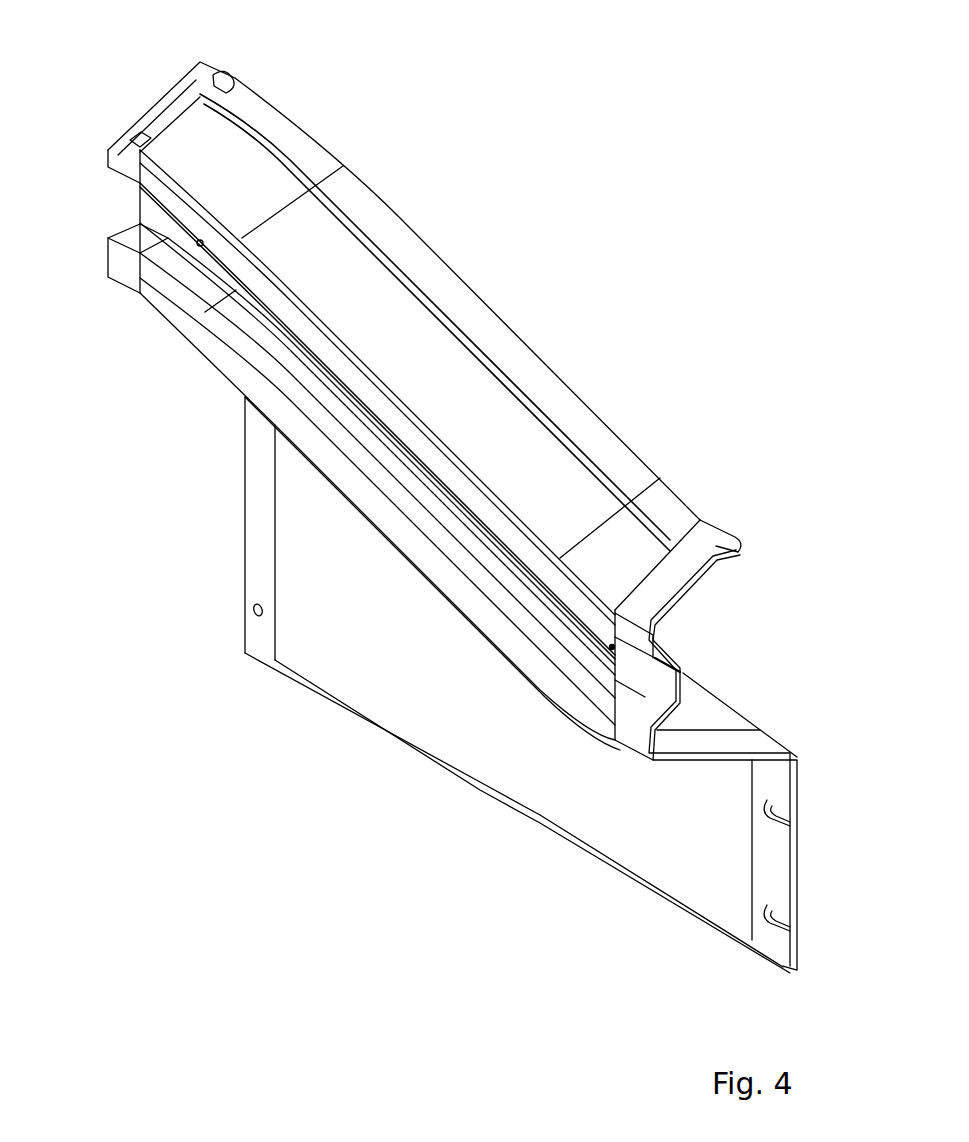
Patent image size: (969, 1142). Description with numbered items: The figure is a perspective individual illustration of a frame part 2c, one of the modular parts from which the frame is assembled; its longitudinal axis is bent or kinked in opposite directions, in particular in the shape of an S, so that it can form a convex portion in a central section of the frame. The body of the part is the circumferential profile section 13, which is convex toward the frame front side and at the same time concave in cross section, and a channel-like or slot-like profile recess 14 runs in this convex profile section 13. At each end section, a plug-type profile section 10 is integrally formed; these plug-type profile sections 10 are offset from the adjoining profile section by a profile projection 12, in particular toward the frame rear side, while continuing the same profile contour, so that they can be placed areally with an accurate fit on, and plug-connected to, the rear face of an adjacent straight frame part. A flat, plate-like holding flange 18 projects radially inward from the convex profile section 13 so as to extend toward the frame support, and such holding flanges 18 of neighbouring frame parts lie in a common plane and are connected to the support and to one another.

The frame part 2c is at (423, 491).
The plug-type profile section 10 is at (137, 122).
The profile projection 12 is at (218, 83).
The circumferential profile section 13 is at (400, 303).
The profile recess 14 is at (170, 238).
The holding flange 18 is at (389, 713).